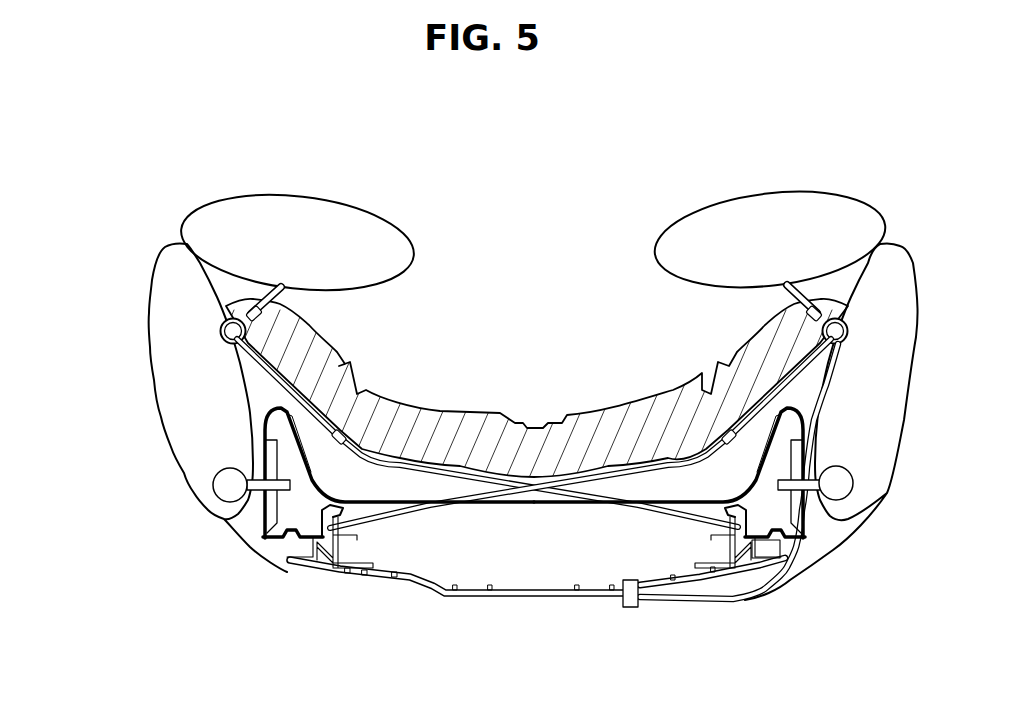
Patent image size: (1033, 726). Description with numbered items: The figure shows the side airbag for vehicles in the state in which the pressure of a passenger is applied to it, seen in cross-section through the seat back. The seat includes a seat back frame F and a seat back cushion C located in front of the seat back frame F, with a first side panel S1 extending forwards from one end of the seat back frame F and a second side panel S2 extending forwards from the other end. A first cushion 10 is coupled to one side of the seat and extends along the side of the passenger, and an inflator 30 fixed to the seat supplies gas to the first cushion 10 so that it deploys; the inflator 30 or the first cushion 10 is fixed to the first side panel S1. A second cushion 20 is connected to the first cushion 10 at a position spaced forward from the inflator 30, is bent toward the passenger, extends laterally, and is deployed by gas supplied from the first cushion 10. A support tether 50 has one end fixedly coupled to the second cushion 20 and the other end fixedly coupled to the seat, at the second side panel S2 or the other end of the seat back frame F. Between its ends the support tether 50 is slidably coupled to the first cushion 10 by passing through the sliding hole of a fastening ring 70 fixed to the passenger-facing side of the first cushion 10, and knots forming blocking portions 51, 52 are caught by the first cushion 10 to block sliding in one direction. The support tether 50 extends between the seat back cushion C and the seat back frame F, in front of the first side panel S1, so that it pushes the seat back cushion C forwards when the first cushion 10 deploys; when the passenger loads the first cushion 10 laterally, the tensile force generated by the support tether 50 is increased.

The first cushion 10 is at (187, 367).
The second cushion 20 is at (308, 215).
The inflator 30 is at (224, 489).
The support tether 50 is at (414, 472).
The blocking portion 51 is at (246, 315).
The blocking portion 52 is at (373, 387).
The fastening ring 70 is at (222, 324).
The seat back cushion C is at (630, 418).
The seat back frame F is at (533, 596).
The first side panel S1 is at (258, 533).
The second side panel S2 is at (773, 540).